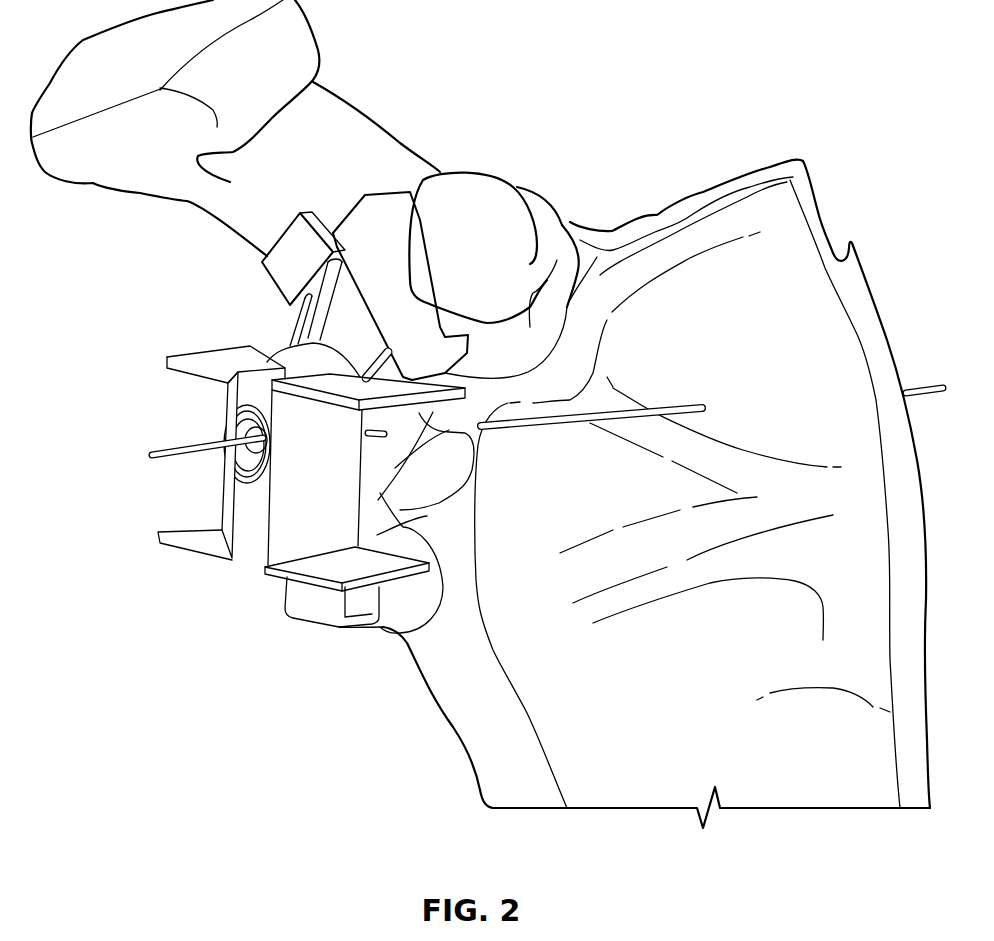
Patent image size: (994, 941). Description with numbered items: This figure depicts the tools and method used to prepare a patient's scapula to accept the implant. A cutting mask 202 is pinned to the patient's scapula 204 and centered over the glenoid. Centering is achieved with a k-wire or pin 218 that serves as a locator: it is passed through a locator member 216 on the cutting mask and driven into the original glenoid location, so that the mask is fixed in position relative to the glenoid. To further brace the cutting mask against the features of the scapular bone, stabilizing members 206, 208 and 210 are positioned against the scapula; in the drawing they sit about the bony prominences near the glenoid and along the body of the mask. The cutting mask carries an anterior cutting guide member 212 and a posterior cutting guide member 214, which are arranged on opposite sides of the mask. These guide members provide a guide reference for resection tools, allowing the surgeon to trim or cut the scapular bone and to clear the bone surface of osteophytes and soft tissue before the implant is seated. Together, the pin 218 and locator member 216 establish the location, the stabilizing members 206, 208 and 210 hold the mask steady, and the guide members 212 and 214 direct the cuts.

The cutting mask 202 is at (287, 496).
The scapula 204 is at (766, 257).
The stabilizing member 206 is at (283, 270).
The stabilizing member 208 is at (378, 275).
The stabilizing member 210 is at (327, 600).
The anterior cutting guide member 212 is at (304, 457).
The posterior cutting guide member 214 is at (222, 470).
The locator member 216 is at (247, 433).
The k-wire or pin 218 is at (165, 450).